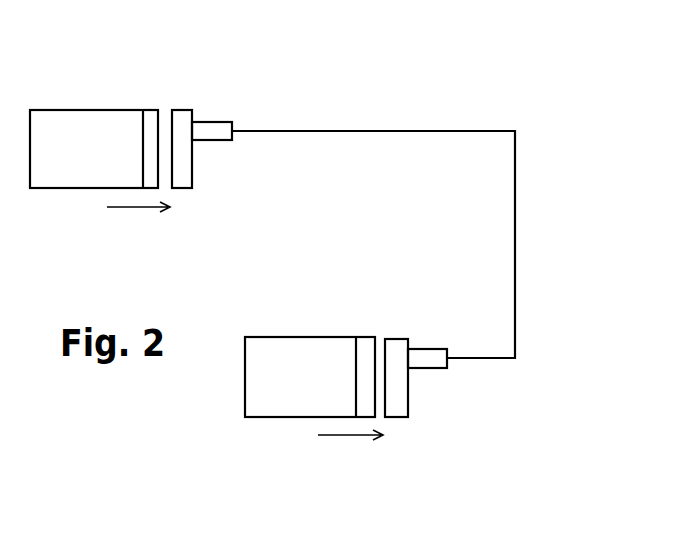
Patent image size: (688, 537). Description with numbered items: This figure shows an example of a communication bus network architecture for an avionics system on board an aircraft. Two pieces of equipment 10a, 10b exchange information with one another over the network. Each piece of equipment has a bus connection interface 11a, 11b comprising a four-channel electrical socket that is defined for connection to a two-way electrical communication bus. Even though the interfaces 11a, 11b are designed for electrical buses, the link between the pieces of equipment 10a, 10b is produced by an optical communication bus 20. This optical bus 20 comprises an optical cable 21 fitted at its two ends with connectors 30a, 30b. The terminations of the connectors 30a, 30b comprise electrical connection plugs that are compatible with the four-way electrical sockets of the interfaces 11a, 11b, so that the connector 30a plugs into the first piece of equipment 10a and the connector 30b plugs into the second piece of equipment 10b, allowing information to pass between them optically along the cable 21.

The piece of equipment 10a is at (95, 120).
The bus connection interface 11a is at (150, 117).
The connector 30a is at (212, 130).
The piece of equipment 10b is at (285, 418).
The bus connection interface 11b is at (365, 342).
The connector 30b is at (432, 357).
The optical cable 21 is at (420, 131).
The optical communication bus 20 is at (540, 263).